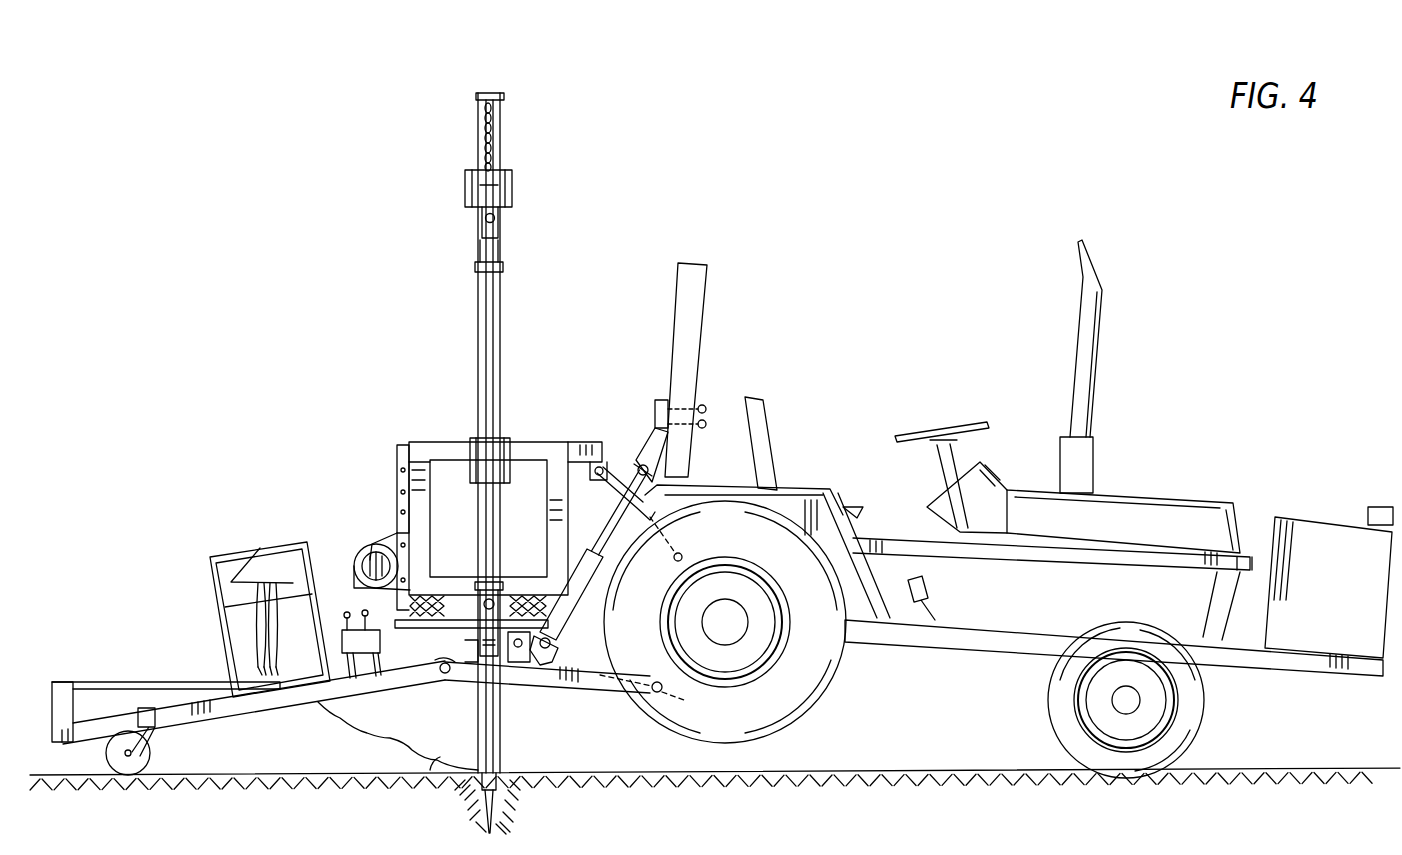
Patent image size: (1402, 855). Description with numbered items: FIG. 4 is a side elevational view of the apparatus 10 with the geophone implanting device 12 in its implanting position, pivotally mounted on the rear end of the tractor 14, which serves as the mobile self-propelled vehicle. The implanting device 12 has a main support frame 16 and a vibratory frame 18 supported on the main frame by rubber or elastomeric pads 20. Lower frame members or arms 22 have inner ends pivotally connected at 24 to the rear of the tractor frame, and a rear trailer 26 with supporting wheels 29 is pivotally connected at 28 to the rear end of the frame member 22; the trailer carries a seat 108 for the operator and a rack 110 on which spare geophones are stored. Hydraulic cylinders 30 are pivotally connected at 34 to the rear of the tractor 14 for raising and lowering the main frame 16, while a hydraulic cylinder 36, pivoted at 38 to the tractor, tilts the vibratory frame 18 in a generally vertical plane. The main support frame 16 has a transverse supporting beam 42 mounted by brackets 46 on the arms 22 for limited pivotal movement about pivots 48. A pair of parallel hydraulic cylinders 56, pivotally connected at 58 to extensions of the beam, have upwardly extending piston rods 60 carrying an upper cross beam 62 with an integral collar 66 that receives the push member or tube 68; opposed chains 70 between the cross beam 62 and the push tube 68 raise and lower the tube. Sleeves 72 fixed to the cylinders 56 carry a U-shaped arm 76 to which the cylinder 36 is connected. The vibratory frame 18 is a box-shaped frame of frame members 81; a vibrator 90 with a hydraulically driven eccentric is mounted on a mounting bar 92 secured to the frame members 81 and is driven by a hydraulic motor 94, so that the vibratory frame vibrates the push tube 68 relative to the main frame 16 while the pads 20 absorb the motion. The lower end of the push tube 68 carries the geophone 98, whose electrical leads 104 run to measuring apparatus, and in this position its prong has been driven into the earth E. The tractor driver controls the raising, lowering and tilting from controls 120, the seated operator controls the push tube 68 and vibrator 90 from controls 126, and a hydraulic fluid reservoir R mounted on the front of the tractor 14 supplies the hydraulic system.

The apparatus 10 is at (932, 250).
The geophone implanting device 12 is at (420, 390).
The tractor 14 is at (1107, 478).
The main support frame 16 is at (453, 681).
The vibratory frame 18 is at (395, 452).
The rubber or elastomeric pads 20 is at (500, 588).
The lower frame members or arms 22 is at (561, 684).
The pivot 24 is at (657, 696).
The rear trailer 26 is at (95, 662).
The pivot 28 is at (368, 734).
The supporting wheels 29 is at (140, 765).
The hydraulic cylinders 30 is at (580, 612).
The pivot 34 is at (640, 460).
The hydraulic cylinder 36 is at (695, 507).
The pivot 38 is at (684, 556).
The transverse supporting beam 42 is at (490, 665).
The brackets 46 is at (548, 664).
The pivots 48 is at (522, 663).
The parallel hydraulic cylinders 56 is at (497, 332).
The pivot 58 is at (478, 623).
The piston rods 60 is at (500, 250).
The upper cross beam 62 is at (474, 196).
The collar 66 is at (512, 190).
The push member or tube 68 is at (500, 130).
The opposed chains 70 is at (485, 138).
The sleeves 72 is at (493, 440).
The U-shaped arm 76 is at (537, 455).
The frame members 81 is at (420, 533).
The vibrator 90 is at (362, 558).
The mounting bar 92 is at (397, 492).
The hydraulic motor 94 is at (356, 556).
The geophone 98 is at (505, 790).
The electrical leads 104 is at (430, 770).
The seat 108 is at (137, 680).
The rack 110 is at (212, 580).
The controls 120 is at (656, 414).
The controls 126 is at (360, 648).
The earth E is at (260, 772).
The hydraulic fluid reservoir R is at (1328, 530).